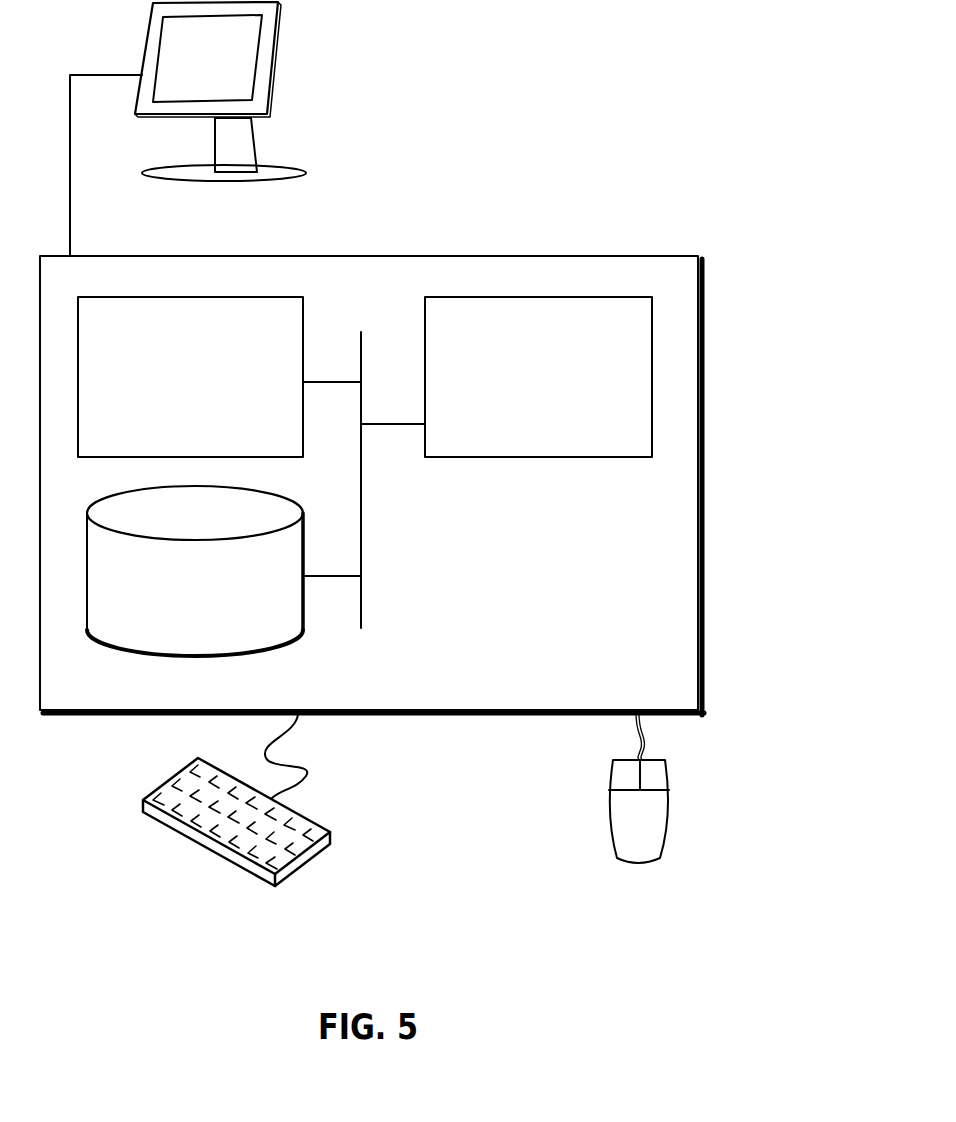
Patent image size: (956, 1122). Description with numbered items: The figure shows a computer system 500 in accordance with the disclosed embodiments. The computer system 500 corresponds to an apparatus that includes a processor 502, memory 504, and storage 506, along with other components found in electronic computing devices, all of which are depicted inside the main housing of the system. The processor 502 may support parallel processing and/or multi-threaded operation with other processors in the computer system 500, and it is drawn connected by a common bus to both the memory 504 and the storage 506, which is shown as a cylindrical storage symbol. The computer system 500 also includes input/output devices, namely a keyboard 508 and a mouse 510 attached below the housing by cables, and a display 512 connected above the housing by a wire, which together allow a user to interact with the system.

The computer system 500 is at (415, 233).
The processor 502 is at (562, 388).
The memory 504 is at (212, 388).
The storage 506 is at (218, 602).
The keyboard 508 is at (162, 820).
The mouse 510 is at (660, 832).
The display 512 is at (188, 129).